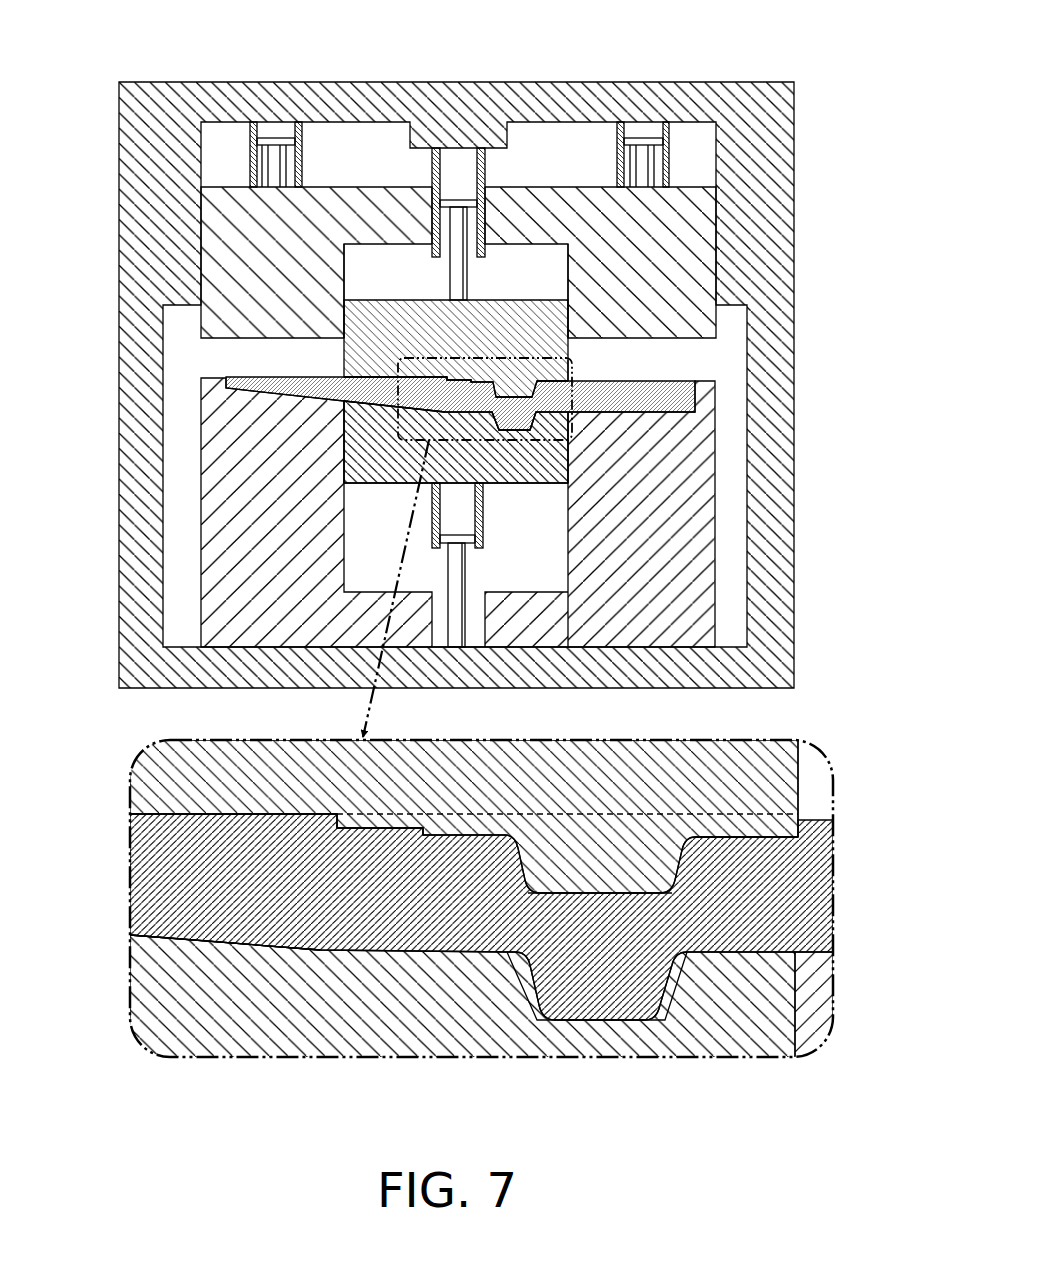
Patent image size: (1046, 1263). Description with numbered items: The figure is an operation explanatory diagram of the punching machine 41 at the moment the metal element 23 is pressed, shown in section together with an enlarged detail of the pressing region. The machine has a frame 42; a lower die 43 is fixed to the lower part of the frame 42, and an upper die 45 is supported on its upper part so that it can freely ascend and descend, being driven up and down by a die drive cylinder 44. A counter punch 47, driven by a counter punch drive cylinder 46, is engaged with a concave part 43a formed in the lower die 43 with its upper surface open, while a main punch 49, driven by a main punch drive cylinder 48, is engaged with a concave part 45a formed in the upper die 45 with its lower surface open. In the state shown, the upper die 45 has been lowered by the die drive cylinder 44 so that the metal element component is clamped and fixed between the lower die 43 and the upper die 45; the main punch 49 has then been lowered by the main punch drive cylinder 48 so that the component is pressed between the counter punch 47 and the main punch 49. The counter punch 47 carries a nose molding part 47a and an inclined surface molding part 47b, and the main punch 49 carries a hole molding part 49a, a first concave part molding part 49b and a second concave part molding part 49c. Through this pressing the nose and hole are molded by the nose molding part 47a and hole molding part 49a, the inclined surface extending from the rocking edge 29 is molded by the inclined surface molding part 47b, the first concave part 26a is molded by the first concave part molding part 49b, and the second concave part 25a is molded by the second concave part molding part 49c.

The punching machine 41 is at (536, 68).
The frame 42 is at (120, 250).
The lower die 43 is at (294, 553).
The concave part 43a is at (350, 458).
The die drive cylinder 44 is at (307, 143).
The upper die 45 is at (291, 263).
The concave part 45a is at (344, 290).
The counter punch drive cylinder 46 is at (471, 551).
The counter punch 47 is at (469, 465).
The nose molding part 47a is at (533, 432).
The inclined surface molding part 47b is at (388, 382).
The main punch drive cylinder 48 is at (492, 171).
The main punch 49 is at (469, 351).
The hole molding part 49a is at (522, 422).
The first concave part molding part 49b is at (560, 393).
The second concave part molding part 49c is at (490, 384).
The metal element 23 is at (660, 379).
The second concave part 25a is at (447, 378).
The first concave part 26a is at (565, 362).
The rocking edge 29 is at (323, 950).